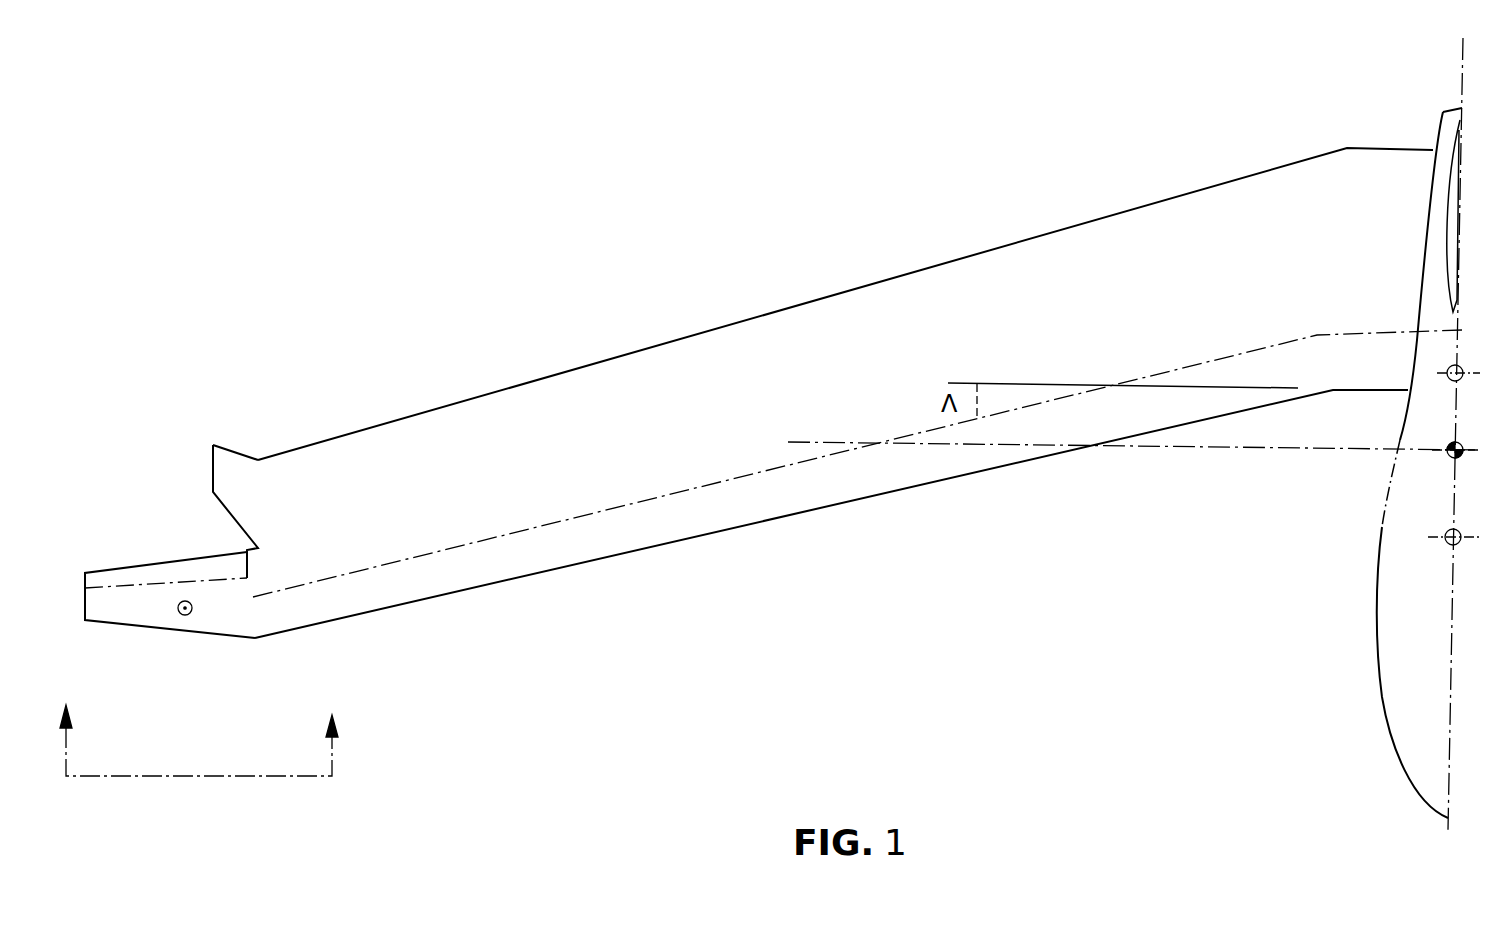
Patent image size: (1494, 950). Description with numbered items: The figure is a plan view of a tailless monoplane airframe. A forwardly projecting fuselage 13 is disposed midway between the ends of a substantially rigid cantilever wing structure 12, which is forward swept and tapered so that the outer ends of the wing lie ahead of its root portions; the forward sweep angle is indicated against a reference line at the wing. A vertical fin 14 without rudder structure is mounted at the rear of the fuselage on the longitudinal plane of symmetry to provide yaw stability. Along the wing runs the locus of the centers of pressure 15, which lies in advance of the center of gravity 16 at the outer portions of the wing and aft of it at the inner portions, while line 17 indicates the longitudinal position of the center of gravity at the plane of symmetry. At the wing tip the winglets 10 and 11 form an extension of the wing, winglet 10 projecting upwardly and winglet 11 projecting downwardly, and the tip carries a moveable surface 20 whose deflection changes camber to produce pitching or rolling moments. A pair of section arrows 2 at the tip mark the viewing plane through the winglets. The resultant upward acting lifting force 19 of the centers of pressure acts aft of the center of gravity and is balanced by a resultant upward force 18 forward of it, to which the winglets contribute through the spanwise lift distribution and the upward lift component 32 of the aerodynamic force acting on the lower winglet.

The winglet 10 is at (241, 484).
The winglet 11 is at (130, 606).
The cantilever wing structure 12 is at (848, 330).
The fuselage 13 is at (1399, 694).
The vertical fin 14 is at (1449, 228).
The locus of the centers of pressure 15 is at (547, 519).
The center of gravity 16 is at (1457, 462).
The line indicating longitudinal position of the center of gravity 17 is at (1134, 440).
The resultant upward acting force 18 is at (1455, 548).
The resultant upward acting lifting force 19 is at (1461, 386).
The moveable surface 20 is at (152, 573).
The upward lift component 32 is at (199, 615).
The section line 2- 2 is at (210, 737).